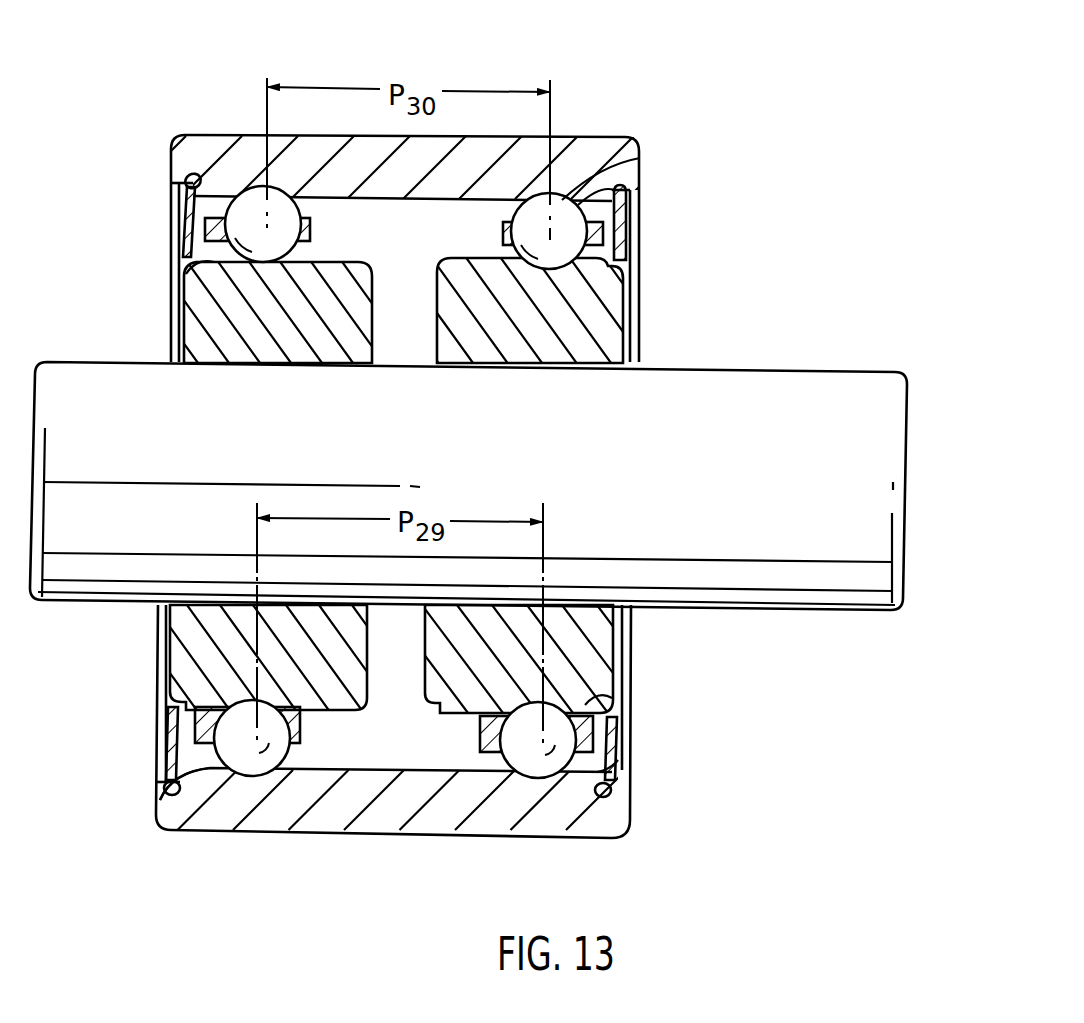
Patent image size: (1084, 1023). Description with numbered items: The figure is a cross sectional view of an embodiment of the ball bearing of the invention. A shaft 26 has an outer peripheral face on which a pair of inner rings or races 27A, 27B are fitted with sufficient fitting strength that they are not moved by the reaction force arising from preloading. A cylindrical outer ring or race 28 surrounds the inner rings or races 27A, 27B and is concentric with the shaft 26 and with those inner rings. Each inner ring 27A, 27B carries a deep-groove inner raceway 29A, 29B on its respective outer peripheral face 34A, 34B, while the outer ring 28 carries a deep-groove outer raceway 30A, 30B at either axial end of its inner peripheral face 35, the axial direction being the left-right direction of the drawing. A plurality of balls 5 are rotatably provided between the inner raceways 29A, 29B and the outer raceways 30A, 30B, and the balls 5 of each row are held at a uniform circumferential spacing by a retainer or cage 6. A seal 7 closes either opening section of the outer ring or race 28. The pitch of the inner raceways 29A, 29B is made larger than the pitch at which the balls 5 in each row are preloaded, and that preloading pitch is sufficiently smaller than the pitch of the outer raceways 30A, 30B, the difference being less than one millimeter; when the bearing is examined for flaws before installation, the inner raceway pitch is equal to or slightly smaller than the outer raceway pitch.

The balls 5 is at (300, 205).
The retainer or cage 6 is at (630, 236).
The seal 7 is at (637, 212).
The shaft 26 is at (683, 385).
The inner ring or race 27A is at (205, 318).
The inner ring or race 27B is at (603, 642).
The outer ring or race 28 is at (388, 190).
The inner raceway 29A is at (232, 258).
The inner raceway 29B is at (603, 698).
The outer raceway 30A is at (258, 188).
The outer raceway 30B is at (562, 200).
The outer peripheral face 34A is at (337, 246).
The outer peripheral face 34B is at (470, 715).
The inner peripheral face 35 is at (328, 768).